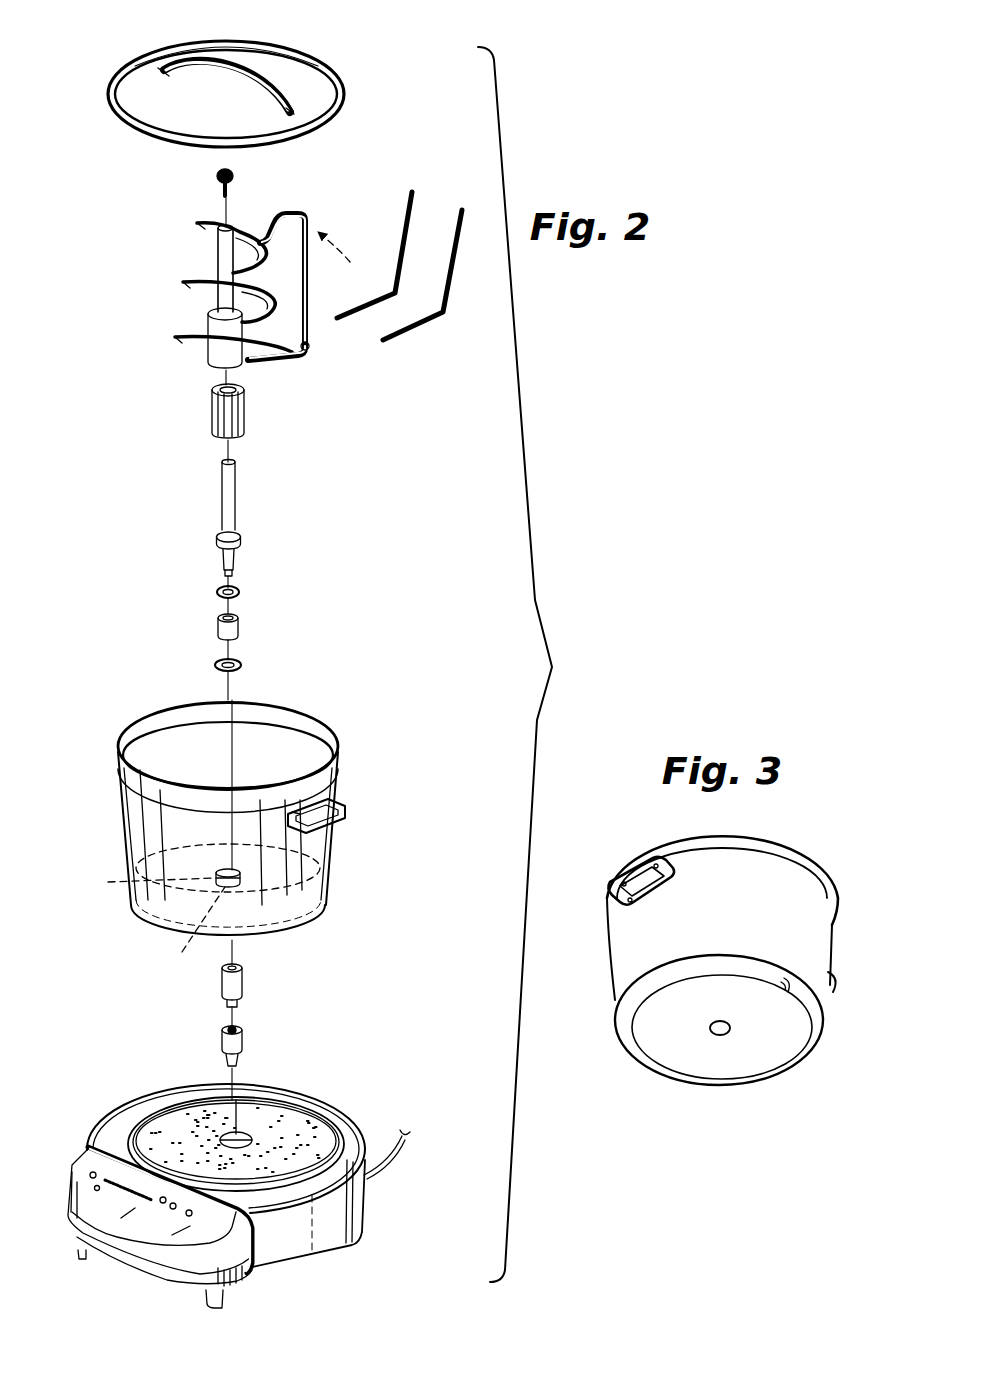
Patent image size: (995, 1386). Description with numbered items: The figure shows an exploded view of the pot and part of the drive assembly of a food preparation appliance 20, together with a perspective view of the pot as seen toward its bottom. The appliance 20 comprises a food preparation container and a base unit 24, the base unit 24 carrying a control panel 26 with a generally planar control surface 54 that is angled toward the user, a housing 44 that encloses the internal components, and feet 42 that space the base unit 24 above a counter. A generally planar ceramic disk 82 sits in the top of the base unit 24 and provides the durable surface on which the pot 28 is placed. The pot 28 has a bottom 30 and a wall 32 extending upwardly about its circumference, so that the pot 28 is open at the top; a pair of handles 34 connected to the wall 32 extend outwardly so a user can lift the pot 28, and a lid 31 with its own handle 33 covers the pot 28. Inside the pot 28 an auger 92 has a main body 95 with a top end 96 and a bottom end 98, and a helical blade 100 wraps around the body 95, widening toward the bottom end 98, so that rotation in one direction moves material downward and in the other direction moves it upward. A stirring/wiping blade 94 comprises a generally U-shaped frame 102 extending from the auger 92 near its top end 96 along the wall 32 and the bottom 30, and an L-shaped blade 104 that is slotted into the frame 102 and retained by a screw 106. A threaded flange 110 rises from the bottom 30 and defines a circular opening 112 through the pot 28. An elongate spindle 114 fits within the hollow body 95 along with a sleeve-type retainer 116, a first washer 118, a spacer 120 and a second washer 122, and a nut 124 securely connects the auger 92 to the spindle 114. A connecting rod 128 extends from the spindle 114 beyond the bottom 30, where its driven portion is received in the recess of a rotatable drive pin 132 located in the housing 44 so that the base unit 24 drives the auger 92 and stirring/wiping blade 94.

In FIG. 2, the food preparation appliance 20 is at (535, 664).
In FIG. 2, the base unit 24 is at (271, 1193).
In FIG. 2, the control panel 26 is at (235, 1193).
In FIG. 2, the pot 28 is at (239, 841).
In FIG. 3, the pot 28 is at (711, 960).
In FIG. 2, the bottom 30 is at (328, 893).
In FIG. 3, the bottom 30 is at (650, 1043).
In FIG. 2, the lid 31 is at (336, 92).
In FIG. 2, the wall 32 is at (128, 835).
In FIG. 3, the wall 32 is at (826, 943).
In FIG. 2, the handle 33 is at (196, 45).
In FIG. 2, the handles 34 is at (347, 810).
In FIG. 3, the handles 34 is at (612, 882).
In FIG. 2, the feet 42 is at (226, 1299).
In FIG. 2, the housing 44 is at (366, 1222).
In FIG. 2, the control surface 54 is at (114, 1245).
In FIG. 2, the disk 82 is at (300, 1120).
In FIG. 2, the auger 92 is at (174, 273).
In FIG. 2, the stirring/wiping blade 94 is at (316, 277).
In FIG. 2, the main body 95 is at (212, 303).
In FIG. 2, the top end 96 is at (197, 273).
In FIG. 2, the bottom end 98 is at (257, 372).
In FIG. 2, the helical blade 100 is at (260, 318).
In FIG. 2, the frame 102 is at (307, 224).
In FIG. 2, the blade 104 is at (459, 218).
In FIG. 2, the screw 106 is at (346, 261).
In FIG. 2, the flange 110 is at (183, 935).
In FIG. 2, the opening 112 is at (148, 882).
In FIG. 2, the spindle 114 is at (221, 500).
In FIG. 2, the retainer 116 is at (211, 412).
In FIG. 2, the first washer 118 is at (217, 592).
In FIG. 2, the spacer 120 is at (217, 628).
In FIG. 2, the second washer 122 is at (214, 665).
In FIG. 2, the nut 124 is at (216, 171).
In FIG. 2, the connecting rod 128 is at (245, 985).
In FIG. 2, the drive pin 132 is at (245, 1043).